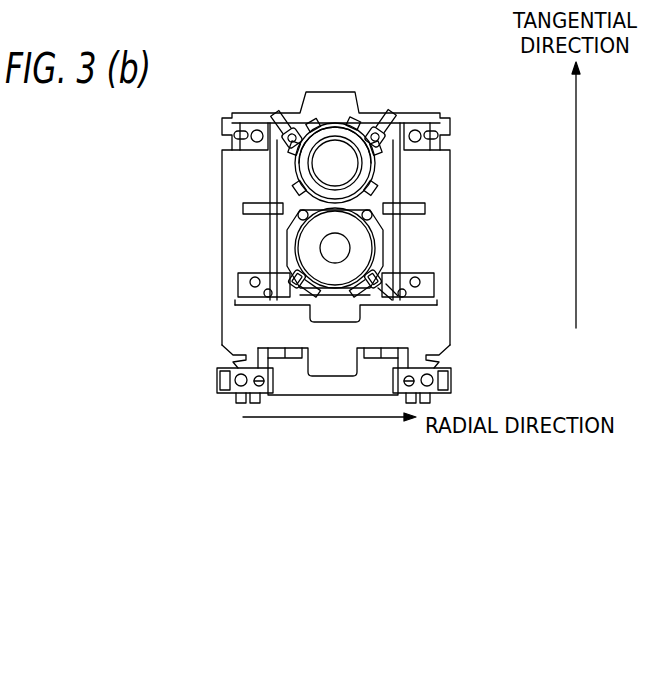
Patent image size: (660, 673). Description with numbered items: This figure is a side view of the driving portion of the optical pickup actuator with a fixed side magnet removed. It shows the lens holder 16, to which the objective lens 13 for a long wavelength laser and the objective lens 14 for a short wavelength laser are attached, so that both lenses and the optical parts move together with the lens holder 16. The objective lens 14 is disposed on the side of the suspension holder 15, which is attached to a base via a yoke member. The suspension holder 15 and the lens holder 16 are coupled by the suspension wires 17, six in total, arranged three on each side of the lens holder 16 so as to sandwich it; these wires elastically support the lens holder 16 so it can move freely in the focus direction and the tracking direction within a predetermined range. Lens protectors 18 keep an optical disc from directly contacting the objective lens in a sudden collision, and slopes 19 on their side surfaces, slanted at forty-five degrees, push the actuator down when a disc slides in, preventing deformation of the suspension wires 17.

The objective lens for a long wavelength laser 13 is at (340, 160).
The objective lens for a short wavelength laser 14 is at (342, 228).
The suspension holder 15 is at (298, 375).
The lens holder 16 is at (282, 158).
The suspension wires 17 is at (224, 226).
The lens protectors 18 is at (374, 145).
The slopes 19 is at (355, 277).